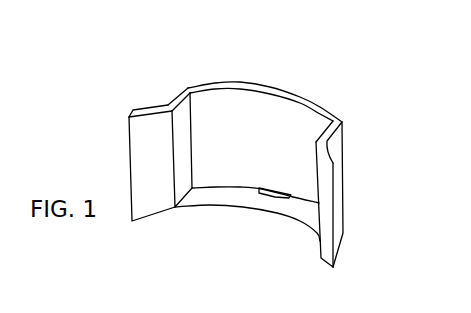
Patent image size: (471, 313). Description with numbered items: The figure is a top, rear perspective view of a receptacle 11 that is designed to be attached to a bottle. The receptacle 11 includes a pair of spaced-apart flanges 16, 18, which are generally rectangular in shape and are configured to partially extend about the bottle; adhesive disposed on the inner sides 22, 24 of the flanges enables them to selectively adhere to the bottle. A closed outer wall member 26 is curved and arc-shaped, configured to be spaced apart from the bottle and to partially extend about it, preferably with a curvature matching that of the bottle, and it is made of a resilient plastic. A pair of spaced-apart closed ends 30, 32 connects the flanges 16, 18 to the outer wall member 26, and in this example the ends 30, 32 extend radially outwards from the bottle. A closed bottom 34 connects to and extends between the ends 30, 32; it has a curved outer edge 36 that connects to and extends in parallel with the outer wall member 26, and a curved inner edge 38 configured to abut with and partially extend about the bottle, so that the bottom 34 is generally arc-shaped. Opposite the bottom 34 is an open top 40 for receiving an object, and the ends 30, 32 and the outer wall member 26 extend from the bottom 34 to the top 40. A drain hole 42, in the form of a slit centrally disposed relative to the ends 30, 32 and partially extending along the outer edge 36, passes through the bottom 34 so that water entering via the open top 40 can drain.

The receptacle 11 is at (362, 137).
The flange 16 is at (146, 131).
The flange 18 is at (322, 172).
The inner side 22 is at (163, 176).
The inner side 24 is at (323, 208).
The outer wall member 26 is at (263, 84).
The end 30 is at (168, 102).
The end 32 is at (337, 141).
The bottom 34 is at (198, 199).
The outer edge 36 is at (237, 189).
The inner edge 38 is at (287, 225).
The open top 40 is at (211, 90).
The drain hole 42 is at (276, 196).